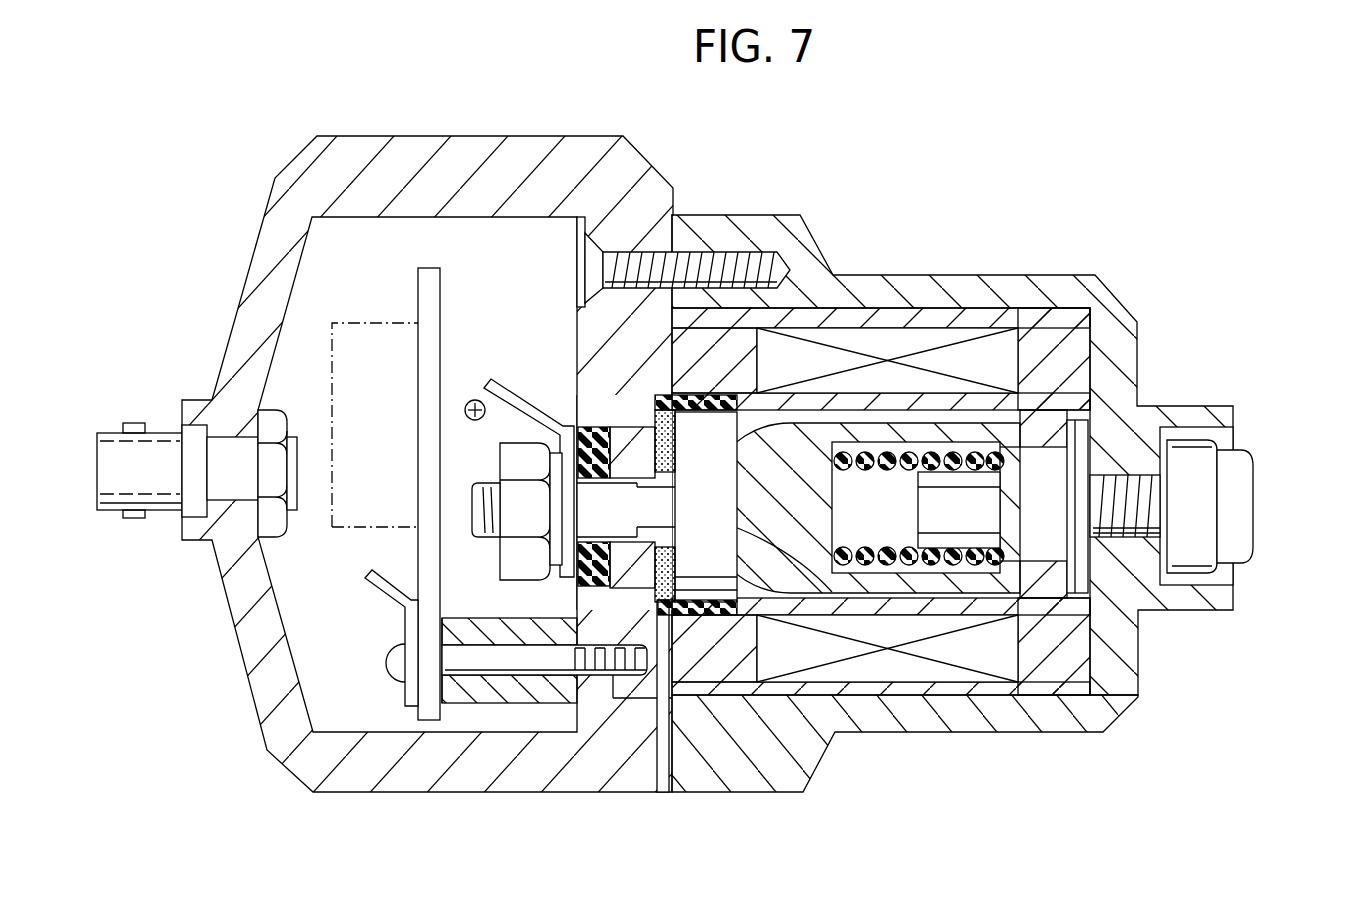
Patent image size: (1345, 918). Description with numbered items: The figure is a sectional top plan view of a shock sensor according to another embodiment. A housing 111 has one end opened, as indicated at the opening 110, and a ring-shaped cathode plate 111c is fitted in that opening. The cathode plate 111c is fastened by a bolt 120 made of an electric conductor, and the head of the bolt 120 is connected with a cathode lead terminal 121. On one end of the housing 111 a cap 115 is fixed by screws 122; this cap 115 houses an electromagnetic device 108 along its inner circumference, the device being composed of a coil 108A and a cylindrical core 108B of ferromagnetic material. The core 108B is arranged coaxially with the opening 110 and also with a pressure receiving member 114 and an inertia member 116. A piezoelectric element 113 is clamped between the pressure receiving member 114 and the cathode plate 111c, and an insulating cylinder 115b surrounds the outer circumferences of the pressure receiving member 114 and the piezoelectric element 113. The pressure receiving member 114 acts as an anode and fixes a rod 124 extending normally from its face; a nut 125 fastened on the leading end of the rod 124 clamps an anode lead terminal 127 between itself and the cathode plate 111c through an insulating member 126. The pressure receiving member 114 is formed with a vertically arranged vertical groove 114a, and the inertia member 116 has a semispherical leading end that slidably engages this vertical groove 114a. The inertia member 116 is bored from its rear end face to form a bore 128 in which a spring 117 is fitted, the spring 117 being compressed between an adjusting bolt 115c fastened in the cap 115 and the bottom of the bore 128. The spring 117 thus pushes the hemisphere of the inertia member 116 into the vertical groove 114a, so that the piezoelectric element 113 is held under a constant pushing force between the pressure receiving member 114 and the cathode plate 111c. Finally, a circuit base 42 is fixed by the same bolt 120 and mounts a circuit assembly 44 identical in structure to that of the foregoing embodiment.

The housing 111 is at (549, 138).
The cap 115 is at (1062, 731).
The piezoelectric element 113 is at (664, 612).
The electromagnetic device 108 is at (992, 143).
The coil 108A is at (940, 330).
The cylindrical core 108B is at (858, 310).
The vertical groove 114a is at (815, 530).
The bore 128 is at (846, 458).
The spring 117 is at (919, 508).
The inertia member 116 is at (1000, 430).
The adjusting bolt 115c is at (1248, 448).
The pressure receiving member 114 is at (748, 575).
The opening 110 is at (593, 397).
The insulating cylinder 115b is at (677, 612).
The cathode plate 111c is at (592, 426).
The insulating member 126 is at (577, 578).
The screws 122 is at (590, 266).
The circuit base 42 is at (418, 405).
The circuit assembly 44 is at (356, 320).
The anode lead terminal 127 is at (482, 382).
The nut 125 is at (506, 452).
The rod 124 is at (492, 542).
The cathode lead terminal 121 is at (380, 575).
The bolt 120 is at (388, 663).